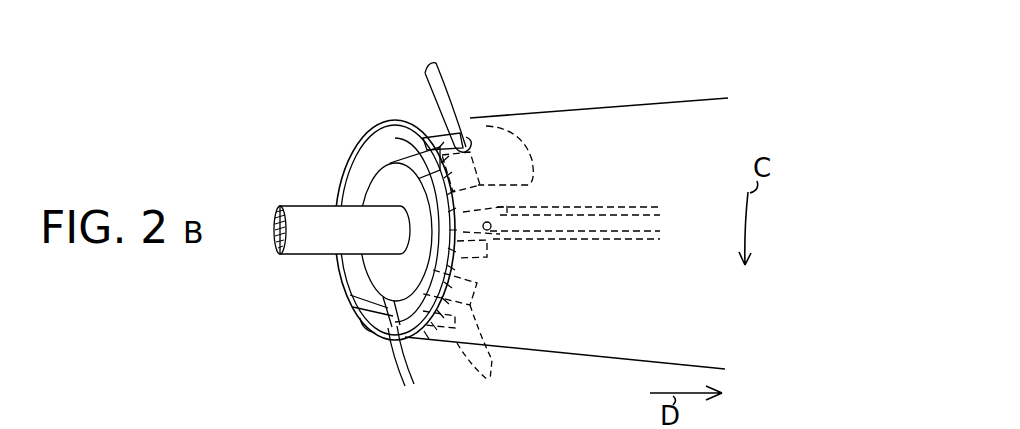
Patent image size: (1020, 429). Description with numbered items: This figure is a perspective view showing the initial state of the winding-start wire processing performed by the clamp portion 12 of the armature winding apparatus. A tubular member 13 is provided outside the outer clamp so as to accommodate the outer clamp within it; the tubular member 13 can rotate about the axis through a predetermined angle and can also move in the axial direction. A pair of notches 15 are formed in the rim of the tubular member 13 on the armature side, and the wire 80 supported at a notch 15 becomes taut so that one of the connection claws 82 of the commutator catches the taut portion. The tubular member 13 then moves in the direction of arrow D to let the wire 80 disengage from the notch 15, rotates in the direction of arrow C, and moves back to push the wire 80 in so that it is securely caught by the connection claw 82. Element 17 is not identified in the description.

The clamp portion 12 is at (520, 200).
The tubular member 13 is at (617, 106).
The notches 15 is at (472, 122).
The lower tangent line 17 is at (547, 357).
The wire 80 is at (442, 70).
The connection claws 82 is at (488, 358).